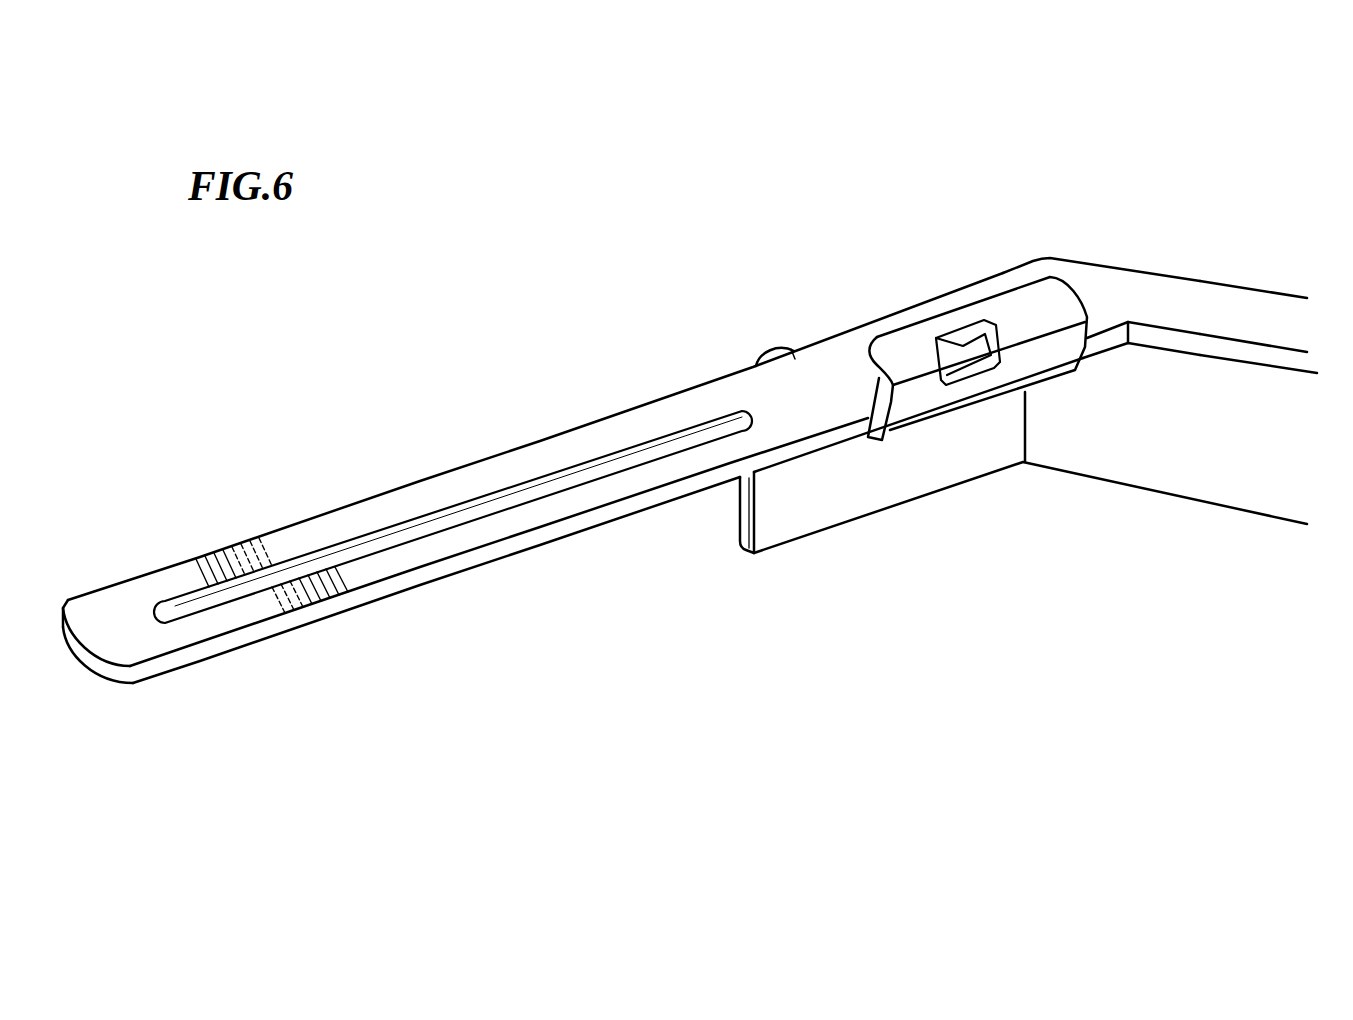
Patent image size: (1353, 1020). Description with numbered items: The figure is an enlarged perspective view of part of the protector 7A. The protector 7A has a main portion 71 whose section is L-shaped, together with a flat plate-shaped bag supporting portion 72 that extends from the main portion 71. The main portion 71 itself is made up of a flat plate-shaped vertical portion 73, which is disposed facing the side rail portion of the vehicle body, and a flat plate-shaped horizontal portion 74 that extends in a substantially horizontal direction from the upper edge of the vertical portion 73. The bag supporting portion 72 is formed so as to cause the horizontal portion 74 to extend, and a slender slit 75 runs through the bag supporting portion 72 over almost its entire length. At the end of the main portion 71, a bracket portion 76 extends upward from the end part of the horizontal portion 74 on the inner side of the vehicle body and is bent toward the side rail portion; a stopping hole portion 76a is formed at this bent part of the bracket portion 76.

The protector 7A is at (1114, 162).
The main portion 71 is at (1268, 290).
The bag supporting portion 72 is at (390, 488).
The vertical portion 73 is at (1178, 467).
The horizontal portion 74 is at (1190, 310).
The slit 75 is at (567, 488).
The bracket portion 76 is at (1021, 298).
The stopping hole portion 76a is at (963, 343).